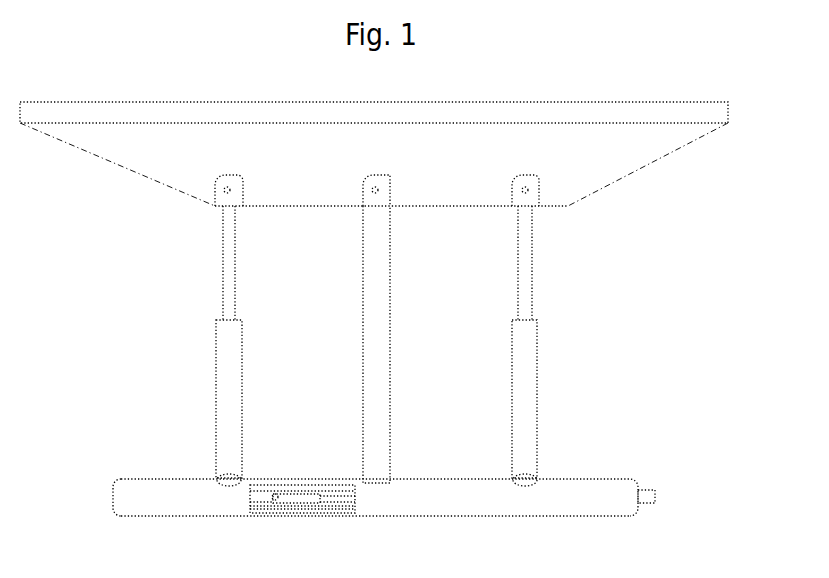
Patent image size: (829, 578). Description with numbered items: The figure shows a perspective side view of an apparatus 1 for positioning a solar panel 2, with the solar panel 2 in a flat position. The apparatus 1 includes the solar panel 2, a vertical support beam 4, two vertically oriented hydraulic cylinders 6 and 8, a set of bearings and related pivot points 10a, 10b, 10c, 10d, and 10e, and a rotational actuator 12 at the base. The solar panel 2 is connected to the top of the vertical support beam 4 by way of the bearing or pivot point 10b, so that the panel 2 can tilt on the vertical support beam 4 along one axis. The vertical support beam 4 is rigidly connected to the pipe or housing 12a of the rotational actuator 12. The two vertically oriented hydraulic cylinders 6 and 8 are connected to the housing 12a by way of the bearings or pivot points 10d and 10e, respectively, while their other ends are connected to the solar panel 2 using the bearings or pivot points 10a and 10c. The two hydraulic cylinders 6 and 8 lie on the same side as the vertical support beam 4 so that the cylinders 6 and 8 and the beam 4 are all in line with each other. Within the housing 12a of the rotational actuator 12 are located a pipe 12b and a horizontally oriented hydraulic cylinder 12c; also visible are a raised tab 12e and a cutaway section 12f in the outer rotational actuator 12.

The apparatus 1 is at (622, 96).
The solar panel 2 is at (730, 113).
The vertical support beam 4 is at (392, 284).
The vertically oriented hydraulic cylinder 6 is at (215, 384).
The vertically oriented hydraulic cylinder 8 is at (540, 375).
The bearing and/or pivot point 10a is at (225, 196).
The bearing and/or pivot point 10b is at (380, 183).
The bearing and/or pivot point 10c is at (532, 185).
The bearing and/or pivot point 10d is at (215, 475).
The bearing and/or pivot point 10e is at (535, 476).
The rotational actuator 12 is at (122, 478).
The housing 12a is at (176, 505).
The pipe 12b is at (655, 497).
The horizontally oriented hydraulic cylinder 12c is at (310, 500).
The raised tab 12e is at (275, 503).
The cutaway section 12f is at (350, 503).